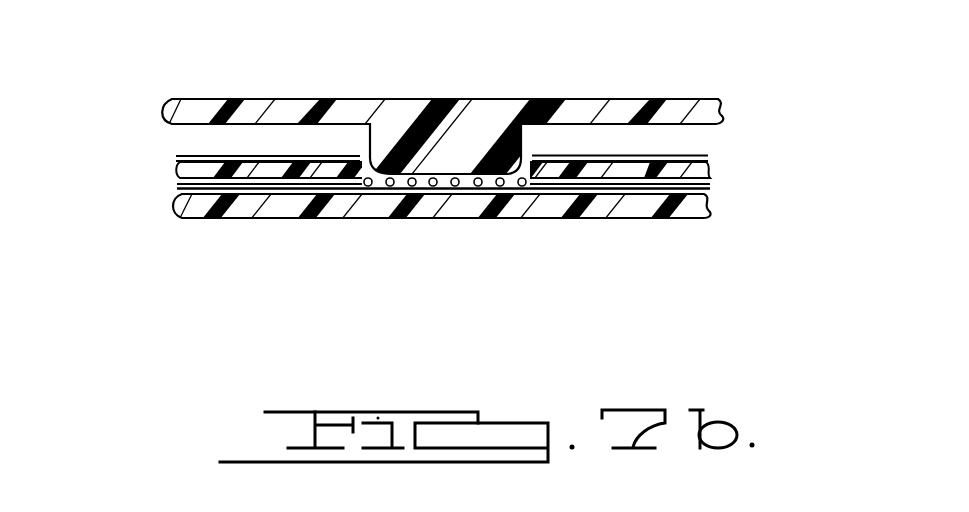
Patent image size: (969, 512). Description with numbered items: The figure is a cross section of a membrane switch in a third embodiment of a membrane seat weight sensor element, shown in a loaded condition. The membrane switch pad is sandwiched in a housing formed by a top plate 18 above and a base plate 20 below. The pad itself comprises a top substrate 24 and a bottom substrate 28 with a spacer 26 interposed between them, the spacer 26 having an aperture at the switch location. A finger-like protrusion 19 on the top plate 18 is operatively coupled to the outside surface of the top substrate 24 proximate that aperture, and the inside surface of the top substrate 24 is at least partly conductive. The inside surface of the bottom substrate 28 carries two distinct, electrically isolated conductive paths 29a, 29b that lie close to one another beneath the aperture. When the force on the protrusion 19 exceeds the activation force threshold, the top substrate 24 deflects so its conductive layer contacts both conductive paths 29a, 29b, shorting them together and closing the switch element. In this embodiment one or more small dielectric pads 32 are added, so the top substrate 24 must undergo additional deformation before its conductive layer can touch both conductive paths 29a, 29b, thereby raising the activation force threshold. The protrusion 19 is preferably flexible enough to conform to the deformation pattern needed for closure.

The top plate 18 is at (627, 112).
The protrusion 19 is at (528, 150).
The base plate 20 is at (707, 204).
The top substrate 24 is at (190, 157).
The spacer 26 is at (183, 174).
The bottom substrate 28 is at (176, 192).
The conductive path 29a is at (378, 188).
The conductive path 29b is at (360, 188).
The dielectric pad 32 is at (412, 178).